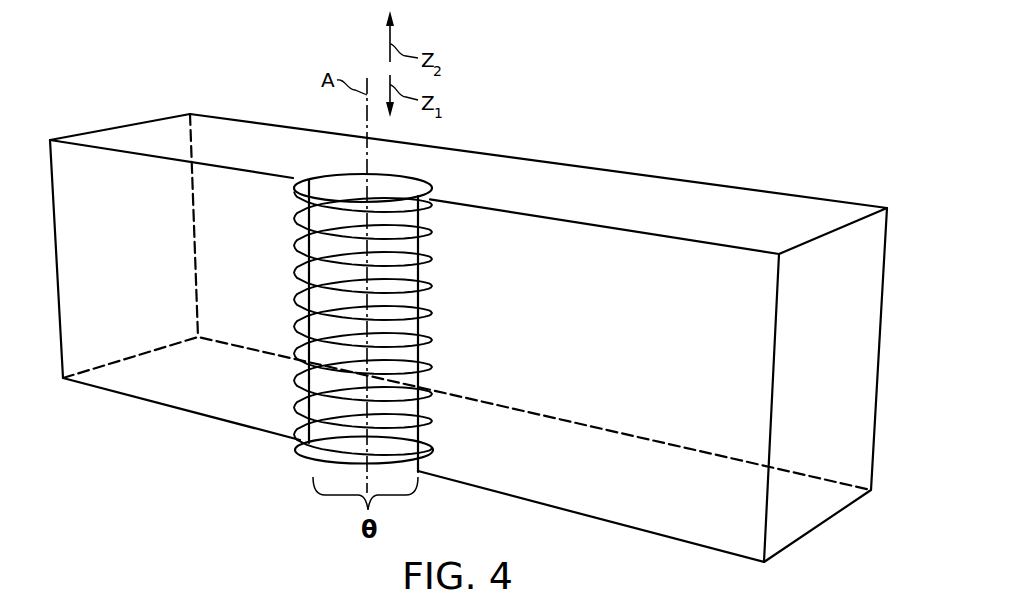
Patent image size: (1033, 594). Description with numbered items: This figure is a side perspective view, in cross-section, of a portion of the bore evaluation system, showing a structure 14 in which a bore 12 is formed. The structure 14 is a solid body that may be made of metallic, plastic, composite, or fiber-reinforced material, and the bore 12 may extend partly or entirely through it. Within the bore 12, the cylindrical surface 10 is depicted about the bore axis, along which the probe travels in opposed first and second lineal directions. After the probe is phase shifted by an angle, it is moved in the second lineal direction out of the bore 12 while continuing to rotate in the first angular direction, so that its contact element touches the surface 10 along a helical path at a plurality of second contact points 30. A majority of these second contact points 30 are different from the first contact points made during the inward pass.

The surface 10 is at (327, 198).
The bore 12 is at (436, 187).
The structure 14 is at (613, 192).
The plurality of second contact points 30 is at (432, 287).